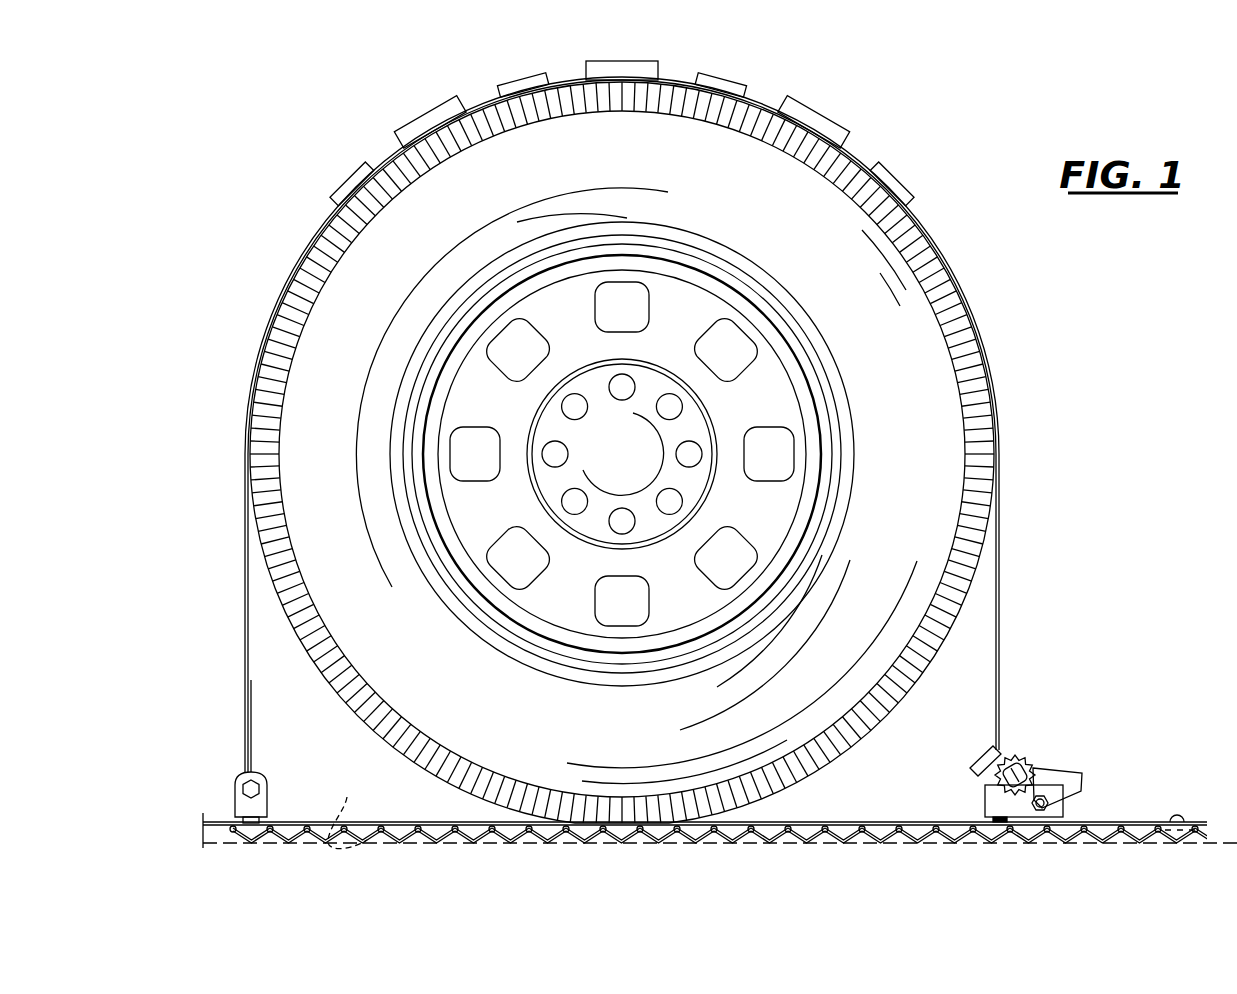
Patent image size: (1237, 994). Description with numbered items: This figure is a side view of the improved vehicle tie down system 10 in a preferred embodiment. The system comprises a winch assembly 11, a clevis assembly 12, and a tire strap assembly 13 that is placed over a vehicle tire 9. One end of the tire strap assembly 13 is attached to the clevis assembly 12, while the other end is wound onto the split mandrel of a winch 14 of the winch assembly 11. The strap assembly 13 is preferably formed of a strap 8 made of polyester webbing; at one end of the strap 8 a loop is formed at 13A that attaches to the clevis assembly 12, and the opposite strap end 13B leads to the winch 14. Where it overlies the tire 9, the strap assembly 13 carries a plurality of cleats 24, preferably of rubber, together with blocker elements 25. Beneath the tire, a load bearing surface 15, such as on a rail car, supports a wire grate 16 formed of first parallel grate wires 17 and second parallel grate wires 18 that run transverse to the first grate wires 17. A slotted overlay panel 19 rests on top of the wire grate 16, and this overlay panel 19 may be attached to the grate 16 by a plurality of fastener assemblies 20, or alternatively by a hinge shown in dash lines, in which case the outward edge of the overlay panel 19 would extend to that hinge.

The strap 8 is at (1000, 628).
The vehicle tire 9 is at (914, 424).
The tie down system 10 is at (955, 187).
The winch assembly 11 is at (1040, 758).
The clevis assembly 12 is at (266, 770).
The tire strap assembly 13 is at (1000, 545).
The loop 13A is at (243, 752).
The second strap end 13B is at (993, 748).
The winch 14 is at (1005, 777).
The load bearing surface 15 is at (347, 797).
The wire grate 16 is at (448, 841).
The first parallel grate wires 17 is at (808, 832).
The second parallel grate wires 18 is at (862, 826).
The slotted overlay panel 19 is at (1090, 822).
The fastener assemblies 20 is at (1177, 822).
The cleats 24 is at (602, 72).
The blocker elements 25 is at (513, 84).